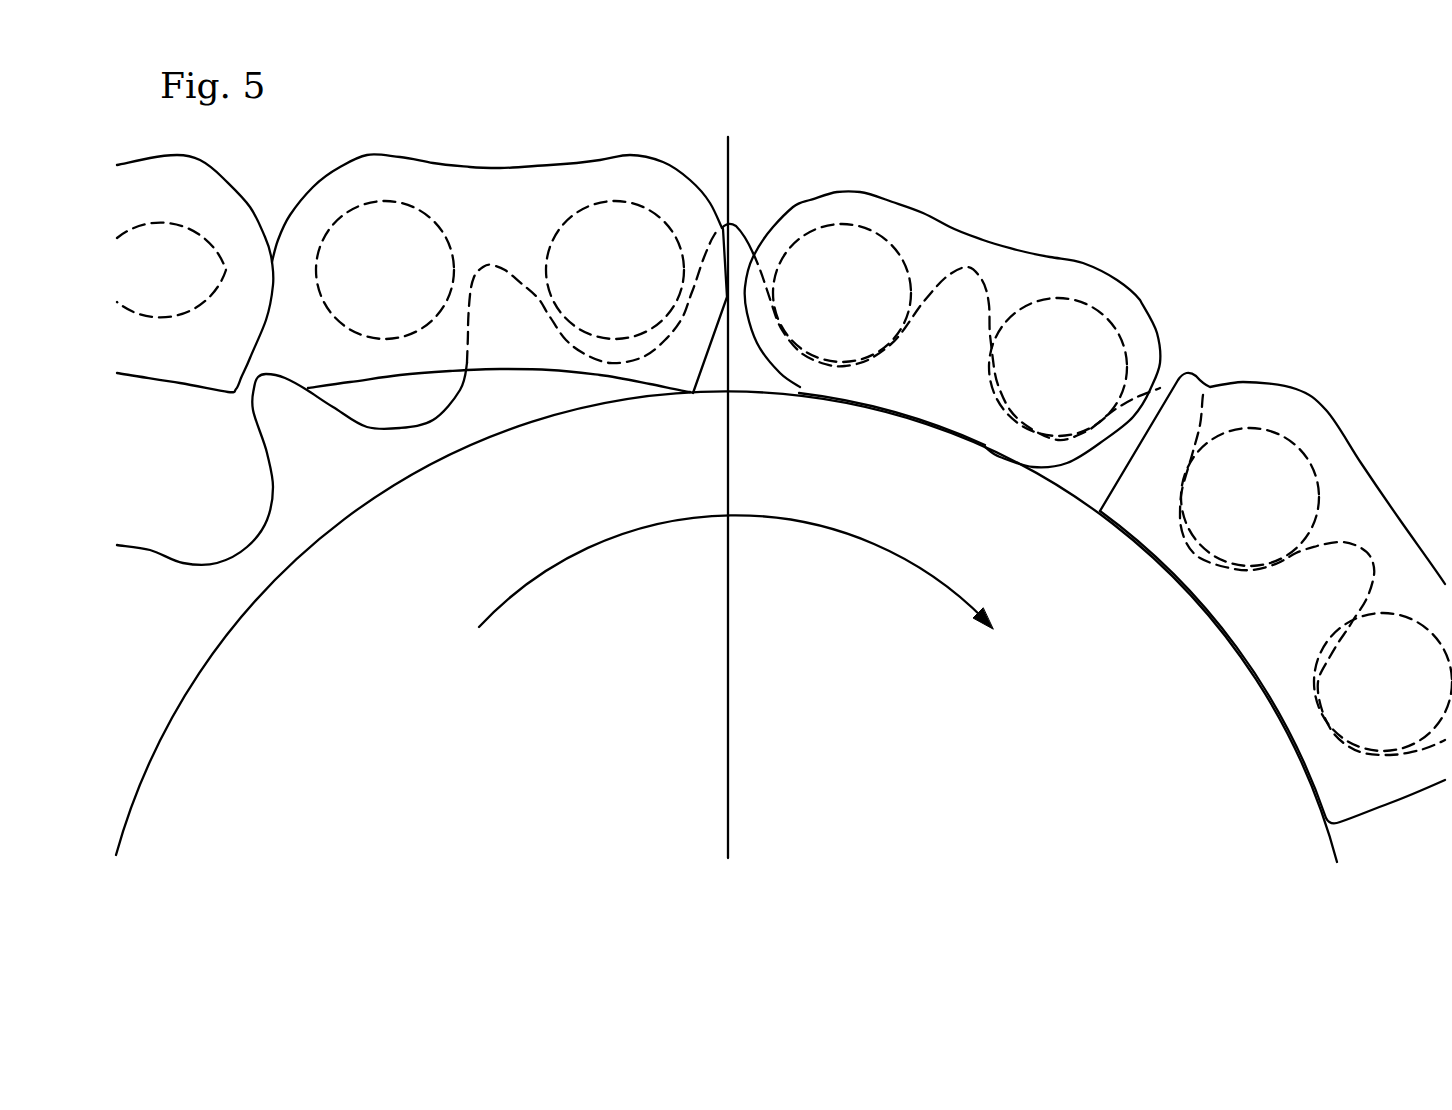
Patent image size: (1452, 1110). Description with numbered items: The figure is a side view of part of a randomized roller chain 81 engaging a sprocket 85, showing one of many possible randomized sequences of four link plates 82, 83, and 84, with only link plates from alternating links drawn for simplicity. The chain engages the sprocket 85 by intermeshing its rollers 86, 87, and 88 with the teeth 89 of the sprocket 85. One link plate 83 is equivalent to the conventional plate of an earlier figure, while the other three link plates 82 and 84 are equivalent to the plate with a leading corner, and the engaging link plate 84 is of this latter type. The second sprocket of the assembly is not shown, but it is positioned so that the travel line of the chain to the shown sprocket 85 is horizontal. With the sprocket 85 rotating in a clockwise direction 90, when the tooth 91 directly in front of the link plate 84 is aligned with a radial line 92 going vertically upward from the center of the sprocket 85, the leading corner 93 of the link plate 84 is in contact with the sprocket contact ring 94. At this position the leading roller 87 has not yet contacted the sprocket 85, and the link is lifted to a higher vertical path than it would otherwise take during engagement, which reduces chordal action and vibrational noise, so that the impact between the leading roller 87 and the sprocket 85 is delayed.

The randomized roller chain 81 is at (1187, 188).
The link plate 82 is at (223, 178).
The link plate 83 is at (923, 213).
The engaging link plate 84 is at (660, 156).
The sprocket 85 is at (868, 729).
The rollers 86 is at (1045, 376).
The leading roller 87 is at (603, 252).
The rollers 88 is at (392, 256).
The teeth 89 is at (263, 380).
The clockwise direction 90 is at (740, 572).
The tooth 91 is at (740, 227).
The radial line 92 is at (752, 497).
The leading corner 93 is at (693, 393).
The sprocket contact ring 94 is at (236, 625).